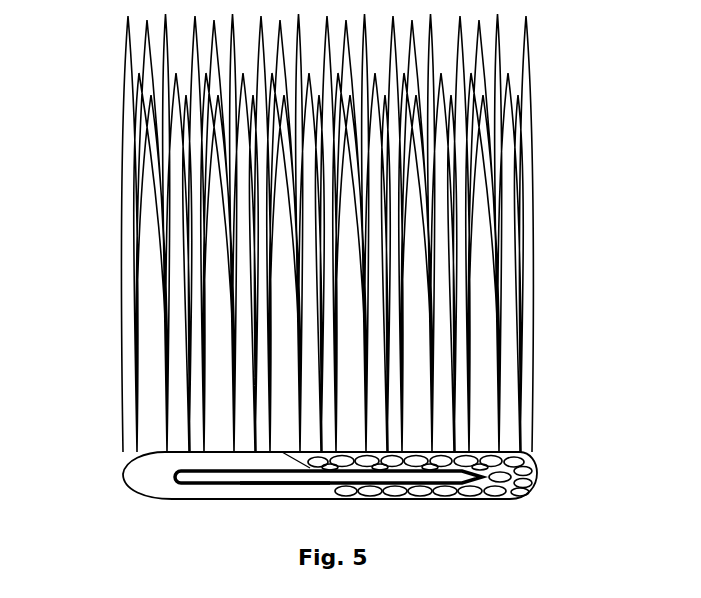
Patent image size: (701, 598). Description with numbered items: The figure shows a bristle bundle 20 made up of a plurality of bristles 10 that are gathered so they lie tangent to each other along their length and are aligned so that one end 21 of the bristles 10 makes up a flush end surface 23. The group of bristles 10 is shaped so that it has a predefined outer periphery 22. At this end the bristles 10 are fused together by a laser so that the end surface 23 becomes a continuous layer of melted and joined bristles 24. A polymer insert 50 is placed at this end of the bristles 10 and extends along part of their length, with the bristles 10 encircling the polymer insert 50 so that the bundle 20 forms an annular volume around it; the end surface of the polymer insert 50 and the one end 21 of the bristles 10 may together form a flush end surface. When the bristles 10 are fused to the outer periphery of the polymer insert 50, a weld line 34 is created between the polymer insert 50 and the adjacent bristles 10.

The bristles 10 is at (377, 233).
The bristle bundle 20 is at (44, 142).
The one end of the bristles 21 is at (407, 503).
The outer periphery 22 is at (299, 502).
The end surface 23 is at (420, 519).
The continuous layer of melted and joined bristles 24 is at (171, 487).
The weld line 34 is at (299, 514).
The polymer insert 50 is at (328, 528).